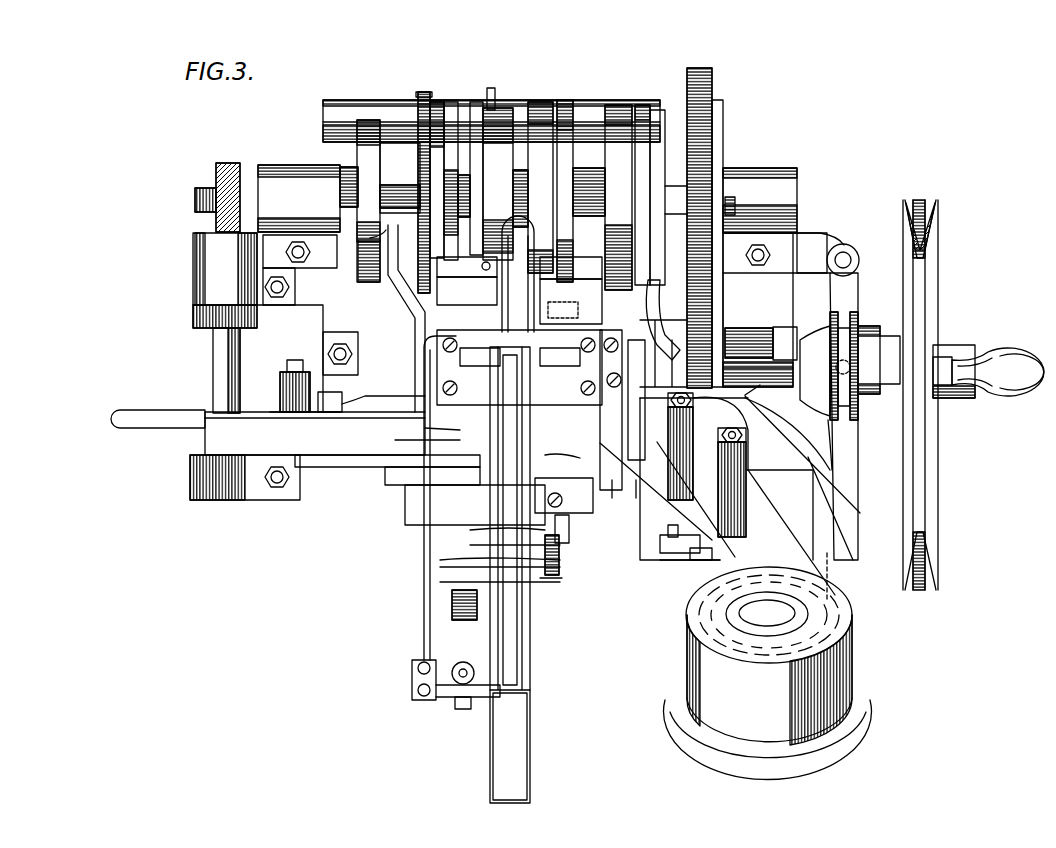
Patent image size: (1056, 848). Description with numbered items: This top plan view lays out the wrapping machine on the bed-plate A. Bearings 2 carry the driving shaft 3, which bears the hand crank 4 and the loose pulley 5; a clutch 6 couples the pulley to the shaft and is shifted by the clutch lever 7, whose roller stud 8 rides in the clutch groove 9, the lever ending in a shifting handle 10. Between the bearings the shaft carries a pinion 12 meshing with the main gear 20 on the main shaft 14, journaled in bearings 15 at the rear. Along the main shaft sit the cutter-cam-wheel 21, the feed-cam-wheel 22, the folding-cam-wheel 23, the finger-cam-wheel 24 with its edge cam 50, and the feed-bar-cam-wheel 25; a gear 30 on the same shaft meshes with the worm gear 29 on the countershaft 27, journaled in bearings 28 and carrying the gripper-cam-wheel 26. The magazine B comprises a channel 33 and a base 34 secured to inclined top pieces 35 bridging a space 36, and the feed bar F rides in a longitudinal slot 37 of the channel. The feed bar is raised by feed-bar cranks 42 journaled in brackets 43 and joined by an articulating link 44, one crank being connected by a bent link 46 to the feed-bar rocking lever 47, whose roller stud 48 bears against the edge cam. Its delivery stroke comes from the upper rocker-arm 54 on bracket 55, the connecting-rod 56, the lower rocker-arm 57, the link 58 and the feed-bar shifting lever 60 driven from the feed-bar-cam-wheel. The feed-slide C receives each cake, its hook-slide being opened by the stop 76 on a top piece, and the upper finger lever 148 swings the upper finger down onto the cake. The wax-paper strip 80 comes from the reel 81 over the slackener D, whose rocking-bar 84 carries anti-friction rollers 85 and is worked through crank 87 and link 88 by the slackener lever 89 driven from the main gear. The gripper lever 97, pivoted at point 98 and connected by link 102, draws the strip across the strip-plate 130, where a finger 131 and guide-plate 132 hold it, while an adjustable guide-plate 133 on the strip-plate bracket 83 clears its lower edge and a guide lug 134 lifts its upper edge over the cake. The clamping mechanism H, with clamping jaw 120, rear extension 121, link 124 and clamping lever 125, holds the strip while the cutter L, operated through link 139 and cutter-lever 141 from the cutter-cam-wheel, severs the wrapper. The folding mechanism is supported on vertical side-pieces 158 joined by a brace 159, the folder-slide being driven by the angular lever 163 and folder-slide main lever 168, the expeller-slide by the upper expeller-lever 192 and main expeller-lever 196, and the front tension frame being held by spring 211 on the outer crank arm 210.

The bearings 2 is at (774, 356).
The driving shaft 3 is at (797, 358).
The crank 4 is at (1022, 363).
The loose pulley 5 is at (938, 302).
The clutch 6 is at (862, 396).
The clutch lever 7 is at (852, 296).
The roller stud 8 is at (850, 365).
The clutch groove 9 is at (850, 440).
The shifting handle 10 is at (845, 550).
The pinion 12 is at (758, 392).
The main shaft 14 is at (393, 190).
The bearings 15 is at (283, 166).
The main gear 20 is at (714, 85).
The cutter-cam-wheel 21 is at (617, 114).
The feed-cam-wheel 22 is at (567, 100).
The folding-cam-wheel 23 is at (497, 125).
The finger-cam-wheel 24 is at (437, 104).
The feed-bar-cam-wheel 25 is at (368, 122).
The gripper-cam-wheel 26 is at (122, 418).
The countershaft 27 is at (235, 349).
The bearings 28 is at (225, 260).
The worm gear 29 is at (195, 197).
The gear 30 is at (228, 163).
The channel 33 is at (530, 656).
The base 34 is at (462, 350).
The inclined top pieces 35 is at (563, 314).
The space 36 is at (500, 305).
The longitudinal slot 37 is at (520, 605).
The feed-bar cranks 42 is at (425, 430).
The brackets 43 is at (395, 440).
The articulating link 44 is at (470, 530).
The bent link 46 is at (405, 421).
The feed-bar rocking lever 47 is at (400, 300).
The roller stud 48 is at (372, 284).
The edge cam 50 is at (426, 92).
The upper rocker-arm 54 is at (433, 690).
The bracket 55 is at (463, 667).
The connecting-rod 56 is at (422, 609).
The lower rocker-arm 57 is at (398, 356).
The link 58 is at (330, 310).
The feed-bar shifting lever 60 is at (374, 256).
The stop 76 is at (467, 268).
The strip 80 is at (776, 495).
The reel 81 is at (866, 685).
The strip-plate bracket 83 is at (726, 479).
The rocking-bar 84 is at (668, 540).
The anti-friction rollers 85 is at (693, 430).
The crank 87 is at (695, 552).
The link 88 is at (665, 562).
The slackener lever 89 is at (717, 308).
The gripper lever 97 is at (310, 410).
The point 98 is at (292, 378).
The link 102 is at (368, 400).
The clamping jaw 120 is at (620, 522).
The rear extension 121 is at (720, 258).
The link 124 is at (714, 150).
The clamping lever 125 is at (712, 115).
The strip-plate 130 is at (810, 460).
The finger 131 is at (693, 430).
The guide-plate 132 is at (600, 302).
The guide-plate 133 is at (568, 464).
The guide lug 134 is at (563, 410).
The link 139 is at (640, 266).
The cutter-lever 141 is at (571, 268).
The upper finger lever 148 is at (449, 124).
The side-pieces 158 is at (400, 514).
The brace 159 is at (564, 495).
The angular lever 163 is at (420, 464).
The folder-slide main lever 168 is at (530, 108).
The upper expeller-lever 192 is at (470, 545).
The main expeller-lever 196 is at (491, 88).
The outer crank arm 210 is at (440, 582).
The spring 211 is at (440, 567).
The bed-plate A is at (781, 267).
The magazine B is at (560, 647).
The feed-slide C is at (518, 274).
The slackener D is at (735, 434).
The feed bar F is at (560, 584).
The clamping mechanism H is at (642, 509).
The cutter L is at (614, 506).